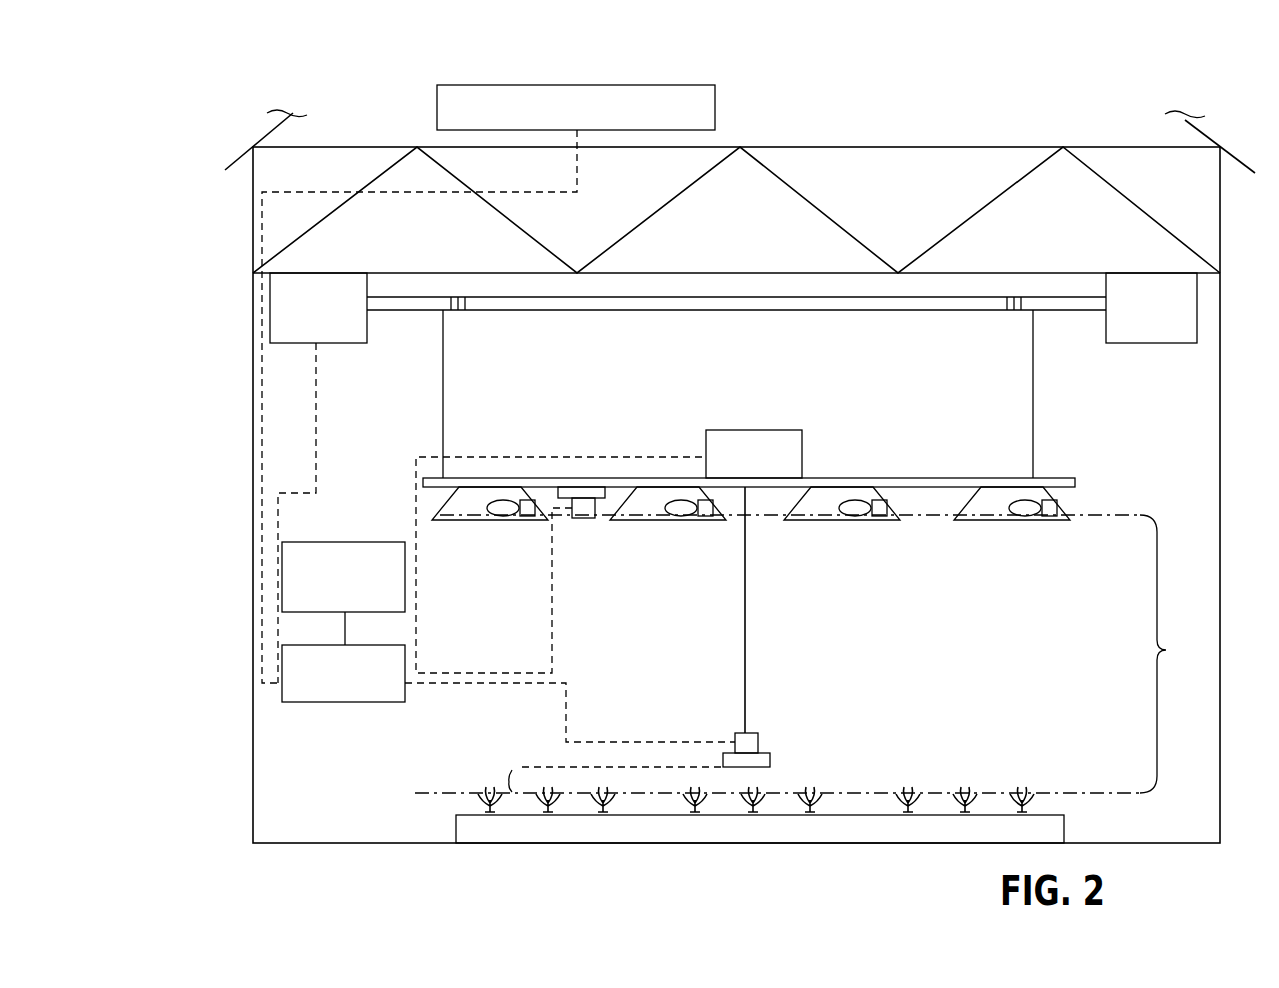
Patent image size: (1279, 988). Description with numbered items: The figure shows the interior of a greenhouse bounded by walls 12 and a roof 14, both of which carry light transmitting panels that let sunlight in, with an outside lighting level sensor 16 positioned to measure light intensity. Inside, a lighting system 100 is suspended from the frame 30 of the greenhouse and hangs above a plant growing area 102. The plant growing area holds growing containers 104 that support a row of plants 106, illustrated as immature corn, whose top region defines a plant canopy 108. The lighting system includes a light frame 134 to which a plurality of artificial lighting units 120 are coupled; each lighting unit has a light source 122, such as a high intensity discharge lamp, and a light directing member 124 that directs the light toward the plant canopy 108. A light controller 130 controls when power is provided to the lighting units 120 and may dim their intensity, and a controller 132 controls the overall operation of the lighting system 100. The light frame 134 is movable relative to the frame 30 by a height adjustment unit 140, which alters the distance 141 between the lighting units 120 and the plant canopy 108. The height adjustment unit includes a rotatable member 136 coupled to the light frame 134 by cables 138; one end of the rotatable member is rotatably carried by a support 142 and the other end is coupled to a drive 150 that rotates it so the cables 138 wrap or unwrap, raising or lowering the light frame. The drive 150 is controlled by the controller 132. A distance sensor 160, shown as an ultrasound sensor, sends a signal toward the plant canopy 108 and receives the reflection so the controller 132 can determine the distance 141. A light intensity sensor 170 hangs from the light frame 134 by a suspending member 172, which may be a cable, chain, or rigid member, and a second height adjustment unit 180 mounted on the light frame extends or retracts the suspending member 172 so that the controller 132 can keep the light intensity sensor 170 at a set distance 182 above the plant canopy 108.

The walls 12 is at (248, 753).
The roof 14 is at (277, 132).
The outside lighting level sensor 16 is at (582, 85).
The frame 30 is at (833, 173).
The lighting system 100 is at (993, 568).
The plant growing area 102 is at (1087, 834).
The growing containers 104 is at (738, 845).
The plants 106 is at (1045, 800).
The plant canopy 108 is at (427, 781).
The artificial lighting units 120 is at (786, 515).
The light source 122 is at (866, 493).
The light directing member 124 is at (830, 490).
The light controller 130 is at (407, 580).
The controller 132 is at (350, 702).
The light frame 134 is at (1087, 484).
The rotatable member 136 is at (702, 294).
The cables 138 is at (440, 326).
The height adjustment unit 140 is at (408, 402).
The distance 141 is at (1176, 654).
The support 142 is at (1140, 345).
The drive 150 is at (297, 345).
The distance sensor 160 is at (585, 536).
The light intensity sensor 170 is at (775, 742).
The suspending member 172 is at (775, 652).
The second height adjustment unit 180 is at (765, 428).
The set distance 182 is at (494, 780).